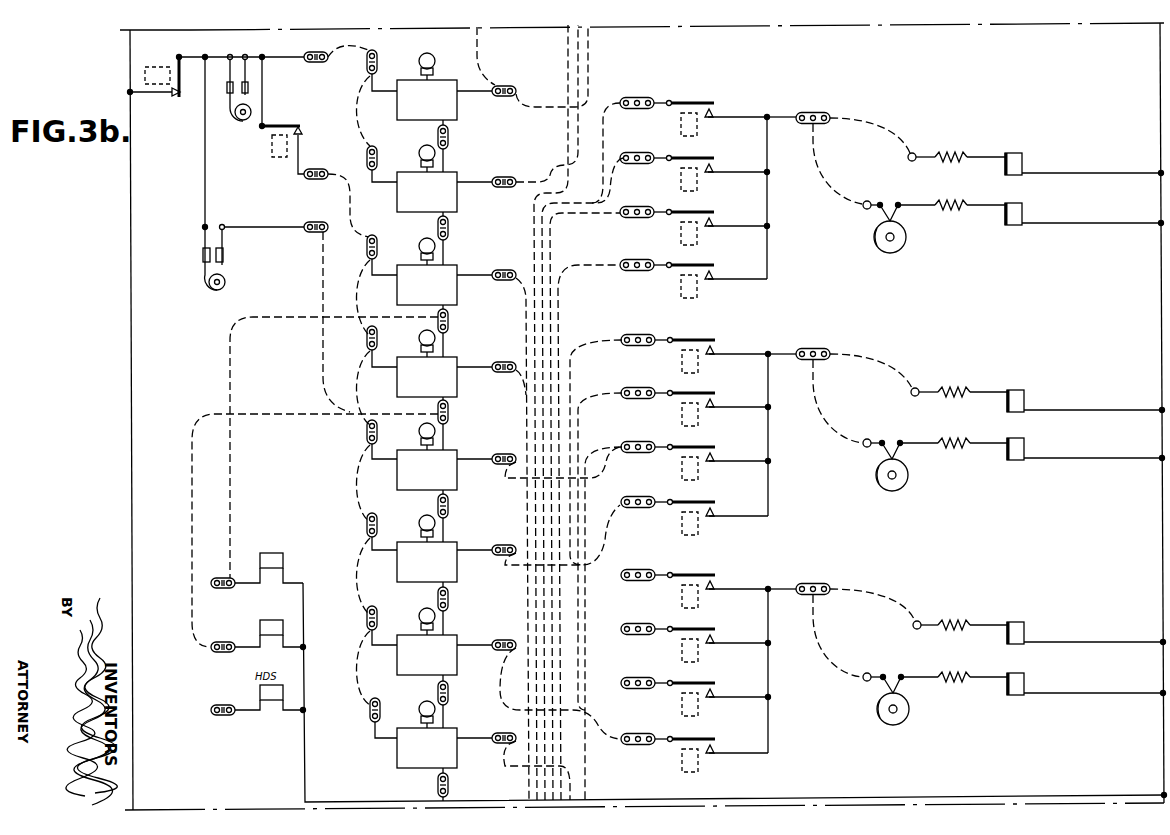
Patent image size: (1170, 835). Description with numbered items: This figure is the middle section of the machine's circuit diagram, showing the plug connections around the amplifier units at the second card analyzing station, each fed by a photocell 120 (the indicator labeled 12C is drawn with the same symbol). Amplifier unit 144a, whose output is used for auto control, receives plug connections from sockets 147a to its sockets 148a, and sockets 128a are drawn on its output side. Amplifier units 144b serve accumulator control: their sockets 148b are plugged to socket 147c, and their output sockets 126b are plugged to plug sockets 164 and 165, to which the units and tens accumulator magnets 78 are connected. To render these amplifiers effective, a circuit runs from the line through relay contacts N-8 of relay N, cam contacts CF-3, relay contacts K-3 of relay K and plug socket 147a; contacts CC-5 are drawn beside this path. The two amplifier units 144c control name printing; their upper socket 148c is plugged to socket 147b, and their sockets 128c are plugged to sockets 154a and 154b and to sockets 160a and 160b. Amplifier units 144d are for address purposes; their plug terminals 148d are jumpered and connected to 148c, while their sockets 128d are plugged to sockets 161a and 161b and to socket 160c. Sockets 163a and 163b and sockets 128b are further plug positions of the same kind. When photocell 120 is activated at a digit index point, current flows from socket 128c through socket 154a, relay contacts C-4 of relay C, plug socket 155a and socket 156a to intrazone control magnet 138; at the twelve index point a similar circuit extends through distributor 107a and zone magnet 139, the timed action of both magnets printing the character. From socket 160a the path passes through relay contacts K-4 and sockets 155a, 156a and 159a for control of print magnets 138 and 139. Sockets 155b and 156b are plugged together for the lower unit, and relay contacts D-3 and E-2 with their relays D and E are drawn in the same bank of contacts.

The relay N is at (160, 67).
The relay contacts N-8 is at (177, 98).
The cam contacts CF-3 is at (228, 77).
The relay contacts K-3 is at (309, 125).
The relay K is at (272, 150).
The plug socket 147a is at (311, 53).
The plug socket 147b is at (308, 232).
The plug socket 147c is at (303, 177).
The plug socket 148a is at (367, 63).
The plug socket 148b is at (367, 247).
The plug socket 148c is at (367, 432).
The plug terminal 148d is at (367, 618).
The photocell 120 is at (432, 59).
The indicator lamp 12C is at (422, 152).
The amplifier unit 144a is at (427, 146).
The amplifier unit 144b is at (427, 331).
The amplifier unit 144c is at (427, 516).
The amplifier unit 144d is at (427, 701).
The plug jack 128a is at (503, 85).
The plug jack 128b is at (504, 270).
The plug socket 128c is at (504, 454).
The plug socket 128d is at (504, 640).
The output socket 126b is at (450, 323).
The plug socket 154a is at (655, 88).
The plug socket 154b is at (628, 334).
The plug socket 161a is at (623, 157).
The plug socket 161b is at (636, 390).
The plug jack 163a is at (626, 216).
The plug jack 163b is at (636, 444).
The plug socket 160a is at (626, 262).
The plug socket 160b is at (636, 499).
The plug socket 160c is at (640, 712).
The relay contacts C-4 is at (715, 112).
The relay D contact 3 D-3 is at (715, 166).
The relay E contact 2 E-2 is at (733, 210).
The relay contacts K-4 is at (733, 263).
The relay C is at (680, 128).
The relay D is at (680, 180).
The relay E is at (680, 233).
The plug socket 155a is at (825, 104).
The plug socket 155b is at (818, 348).
The plug socket 156a is at (914, 152).
The plug socket 156b is at (918, 388).
The plug socket 159a is at (880, 190).
The distributor 107a is at (906, 240).
The intrazone control magnet 138 is at (1022, 163).
The zone magnet 139 is at (1022, 213).
The relay CC contact 5 CC-5 is at (204, 252).
The plug socket 165 is at (212, 580).
The plug socket 164 is at (210, 650).
The accumulator magnet 78 is at (258, 562).